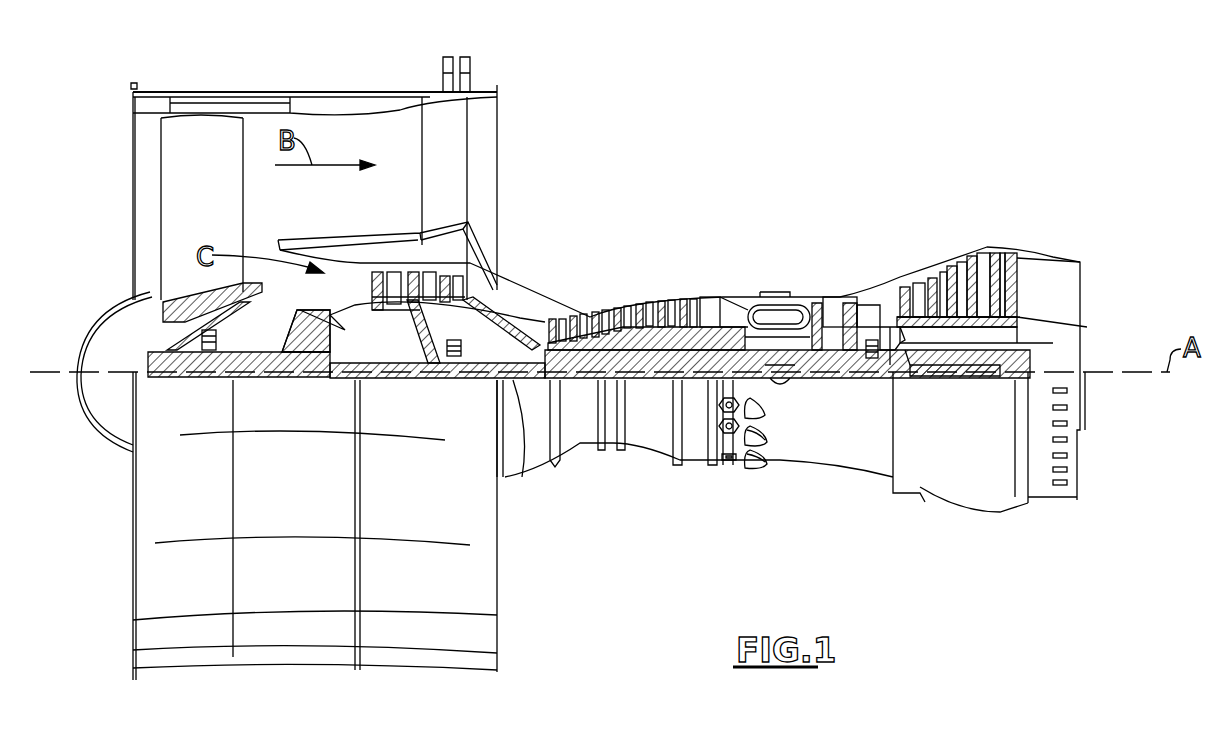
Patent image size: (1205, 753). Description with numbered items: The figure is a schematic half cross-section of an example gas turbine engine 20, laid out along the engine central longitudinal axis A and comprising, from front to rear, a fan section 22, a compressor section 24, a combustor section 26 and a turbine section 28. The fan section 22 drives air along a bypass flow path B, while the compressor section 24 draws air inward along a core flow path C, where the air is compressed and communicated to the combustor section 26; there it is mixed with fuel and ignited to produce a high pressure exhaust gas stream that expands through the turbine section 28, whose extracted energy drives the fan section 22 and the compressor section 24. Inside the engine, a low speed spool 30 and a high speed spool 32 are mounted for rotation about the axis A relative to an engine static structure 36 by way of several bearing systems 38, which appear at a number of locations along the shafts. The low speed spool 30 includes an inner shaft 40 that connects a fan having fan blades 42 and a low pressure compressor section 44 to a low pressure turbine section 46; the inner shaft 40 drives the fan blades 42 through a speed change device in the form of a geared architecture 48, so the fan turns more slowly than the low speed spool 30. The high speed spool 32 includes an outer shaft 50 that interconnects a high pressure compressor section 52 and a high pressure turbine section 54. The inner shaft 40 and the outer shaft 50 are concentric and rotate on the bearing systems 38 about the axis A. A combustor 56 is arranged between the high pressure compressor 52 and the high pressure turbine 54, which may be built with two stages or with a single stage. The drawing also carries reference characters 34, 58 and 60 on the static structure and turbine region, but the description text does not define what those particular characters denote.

The gas turbine engine 20 is at (772, 146).
The fan section 22 is at (342, 68).
The compressor section 24 is at (352, 211).
The combustor section 26 is at (807, 211).
The turbine section 28 is at (1028, 211).
The low speed spool 30 is at (653, 390).
The high speed spool 32 is at (697, 340).
The engine static structure 34 is at (968, 377).
The engine static structure 36 is at (693, 475).
The bearing systems 38 is at (212, 380).
The inner shaft 40 is at (520, 477).
The fan blades 42 is at (216, 217).
The low pressure compressor section 44 is at (395, 262).
The low pressure turbine section 46 is at (960, 267).
The geared architecture 48 is at (320, 360).
The outer shaft 50 is at (772, 358).
The high pressure compressor section 52 is at (628, 343).
The high pressure turbine section 54 is at (833, 297).
The combustor 56 is at (768, 318).
The mid-turbine frame 58 is at (877, 286).
The airfoils / vanes 60 is at (907, 377).